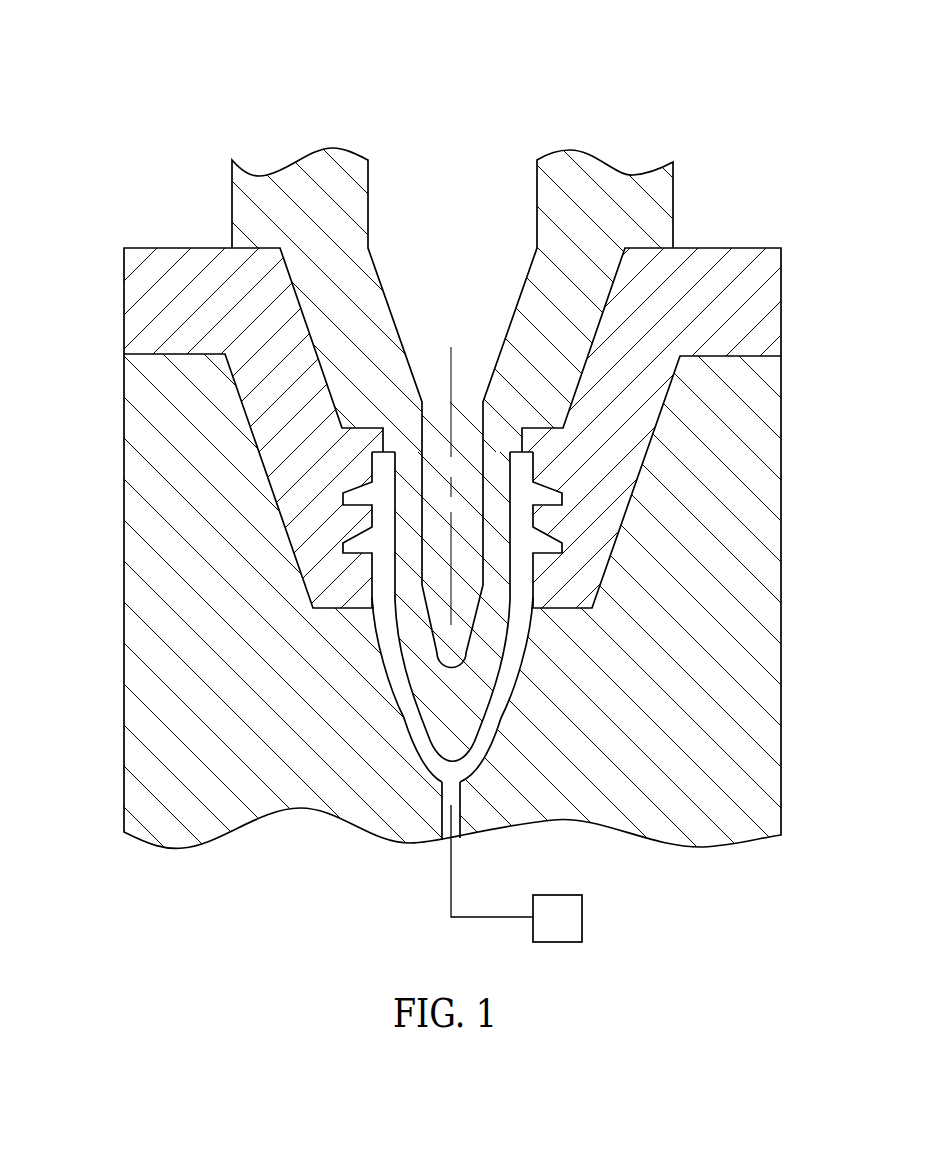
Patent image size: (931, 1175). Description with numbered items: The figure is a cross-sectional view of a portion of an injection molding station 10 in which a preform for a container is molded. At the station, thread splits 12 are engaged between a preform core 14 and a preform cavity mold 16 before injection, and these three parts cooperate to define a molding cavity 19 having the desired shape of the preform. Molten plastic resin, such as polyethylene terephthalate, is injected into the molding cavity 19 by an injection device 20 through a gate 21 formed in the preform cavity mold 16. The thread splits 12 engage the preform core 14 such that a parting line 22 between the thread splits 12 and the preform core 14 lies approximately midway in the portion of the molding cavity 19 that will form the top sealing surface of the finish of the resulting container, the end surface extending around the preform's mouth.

The injection molding station 10 is at (836, 62).
The thread splits 12 is at (152, 302).
The preform core 14 is at (294, 190).
The preform cavity mold 16 is at (158, 722).
The molding cavity 19 is at (490, 714).
The injection device 20 is at (563, 917).
The gate 21 is at (442, 797).
The parting line 22 is at (382, 452).